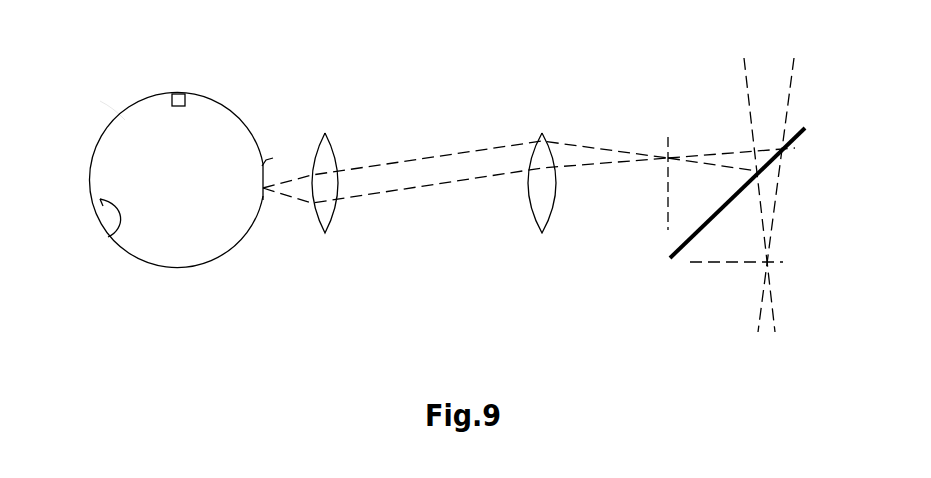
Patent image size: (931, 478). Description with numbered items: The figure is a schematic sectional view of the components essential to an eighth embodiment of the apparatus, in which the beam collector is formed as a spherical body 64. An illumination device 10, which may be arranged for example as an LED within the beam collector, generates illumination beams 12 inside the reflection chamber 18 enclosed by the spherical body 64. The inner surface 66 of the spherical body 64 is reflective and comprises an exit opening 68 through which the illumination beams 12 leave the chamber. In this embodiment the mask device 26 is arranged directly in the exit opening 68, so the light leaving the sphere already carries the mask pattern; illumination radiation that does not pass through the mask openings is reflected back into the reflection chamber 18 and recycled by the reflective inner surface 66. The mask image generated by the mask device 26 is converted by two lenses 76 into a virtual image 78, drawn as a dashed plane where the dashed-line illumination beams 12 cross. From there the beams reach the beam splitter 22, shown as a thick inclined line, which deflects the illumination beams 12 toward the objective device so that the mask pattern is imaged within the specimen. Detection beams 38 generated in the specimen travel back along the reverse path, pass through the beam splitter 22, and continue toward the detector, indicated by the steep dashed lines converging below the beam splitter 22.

The illumination device 10 is at (179, 93).
The illumination beams 12 is at (732, 158).
The reflection chamber 18 is at (185, 193).
The beam splitter 22 is at (793, 145).
The mask device 26 is at (263, 175).
The detection beams 38 is at (763, 192).
The spherical body 64 is at (108, 108).
The inner surface 66 is at (110, 233).
The exit opening 68 is at (273, 158).
The lenses 76 is at (326, 157).
The virtual image 78 is at (670, 152).